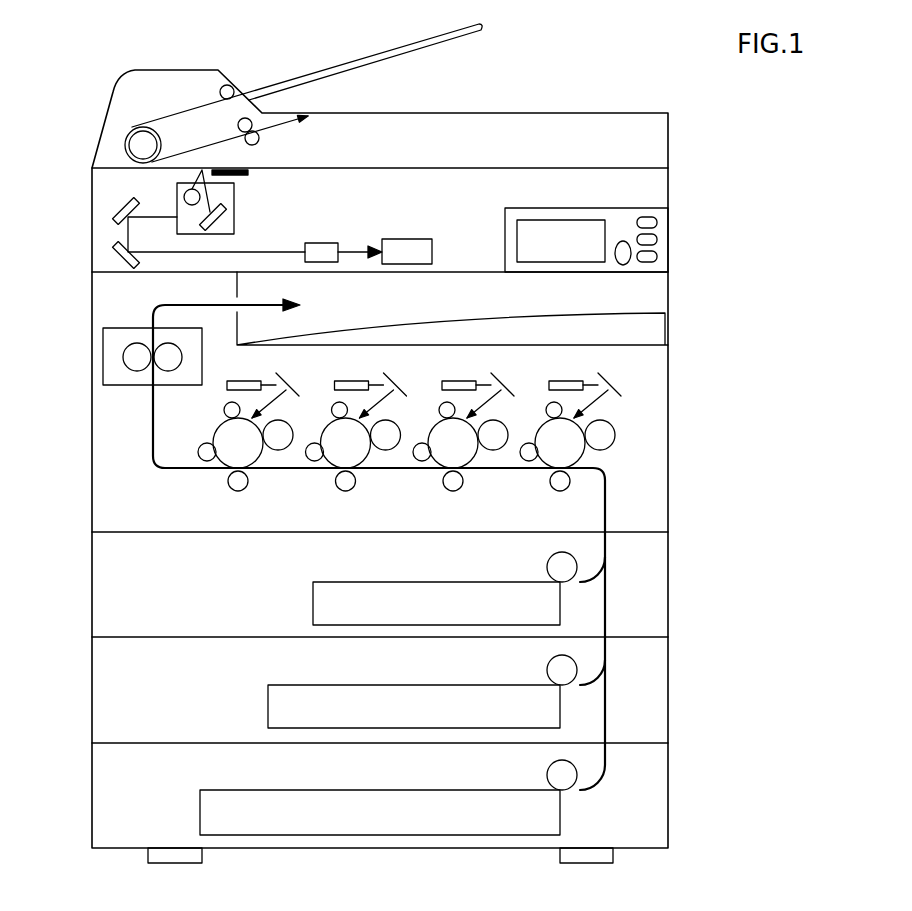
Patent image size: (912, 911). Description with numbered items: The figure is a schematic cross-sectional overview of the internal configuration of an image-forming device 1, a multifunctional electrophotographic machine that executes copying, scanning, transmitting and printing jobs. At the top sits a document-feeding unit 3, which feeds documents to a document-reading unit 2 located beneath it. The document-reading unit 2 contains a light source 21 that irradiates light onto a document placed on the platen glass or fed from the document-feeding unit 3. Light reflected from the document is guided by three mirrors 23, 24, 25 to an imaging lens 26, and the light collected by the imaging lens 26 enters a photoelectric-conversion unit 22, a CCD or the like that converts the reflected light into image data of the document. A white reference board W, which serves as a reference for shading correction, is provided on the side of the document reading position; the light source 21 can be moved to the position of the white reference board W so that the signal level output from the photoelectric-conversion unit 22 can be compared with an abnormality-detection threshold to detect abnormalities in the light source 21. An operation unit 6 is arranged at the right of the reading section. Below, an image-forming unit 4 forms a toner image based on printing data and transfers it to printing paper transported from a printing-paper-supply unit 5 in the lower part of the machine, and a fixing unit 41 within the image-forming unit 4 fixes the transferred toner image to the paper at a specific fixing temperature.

The image-forming device 1 is at (651, 70).
The document-reading unit 2 is at (77, 216).
The document-feeding unit 3 is at (684, 142).
The image-forming unit 4 is at (618, 370).
The printing-paper-supply unit 5 is at (680, 545).
The operation unit 6 is at (684, 237).
The light source 21 is at (184, 195).
The photoelectric-conversion unit 22 is at (418, 239).
The mirror 23 is at (228, 217).
The mirror 24 is at (126, 212).
The mirror 25 is at (118, 258).
The imaging lens 26 is at (326, 243).
The fixing unit 41 is at (103, 340).
The white reference board W is at (247, 167).